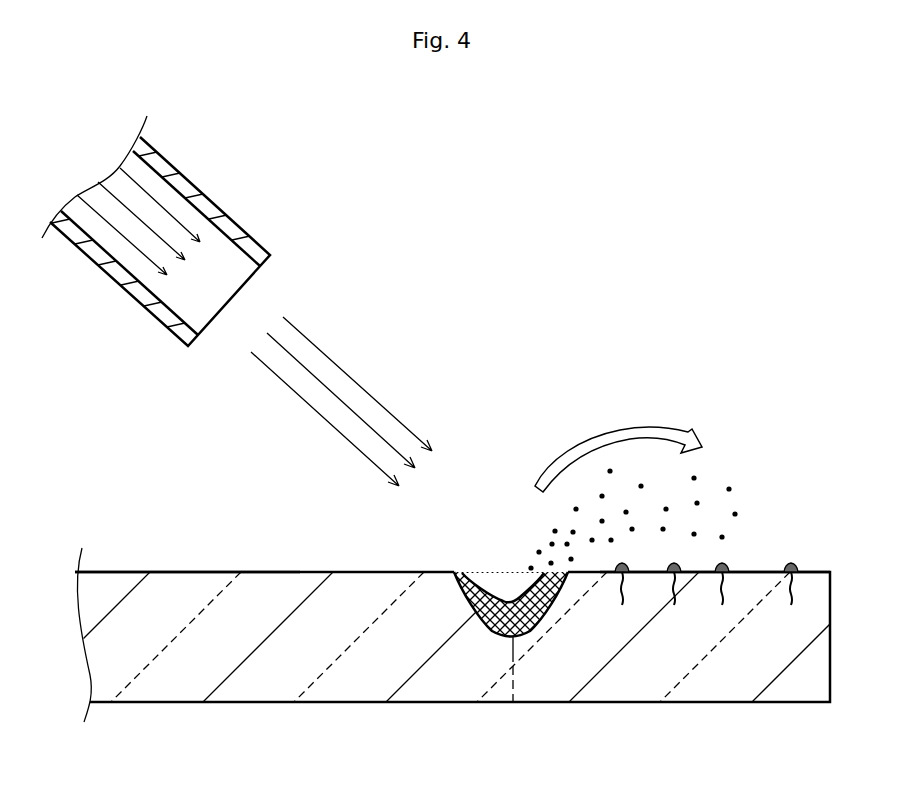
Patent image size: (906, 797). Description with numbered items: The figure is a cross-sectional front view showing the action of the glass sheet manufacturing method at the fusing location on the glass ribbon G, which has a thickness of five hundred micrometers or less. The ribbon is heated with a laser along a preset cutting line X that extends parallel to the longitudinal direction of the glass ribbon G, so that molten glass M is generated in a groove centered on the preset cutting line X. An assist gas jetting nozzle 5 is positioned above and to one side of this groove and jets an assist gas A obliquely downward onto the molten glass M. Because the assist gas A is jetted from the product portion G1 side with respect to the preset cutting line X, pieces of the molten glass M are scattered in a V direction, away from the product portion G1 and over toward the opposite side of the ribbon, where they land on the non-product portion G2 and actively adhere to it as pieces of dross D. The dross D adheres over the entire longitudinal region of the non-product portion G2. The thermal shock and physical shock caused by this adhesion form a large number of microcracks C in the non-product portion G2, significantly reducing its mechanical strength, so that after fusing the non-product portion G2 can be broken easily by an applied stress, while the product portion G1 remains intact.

The assist gas jetting nozzle 5 is at (127, 292).
The assist gas A is at (341, 401).
The V direction V is at (618, 451).
The dross D is at (698, 502).
The molten glass M is at (468, 572).
The glass ribbon G is at (288, 563).
The product portion G1 is at (193, 572).
The non-product portion G2 is at (767, 572).
The microcrack C is at (793, 587).
The preset cutting line X is at (513, 687).